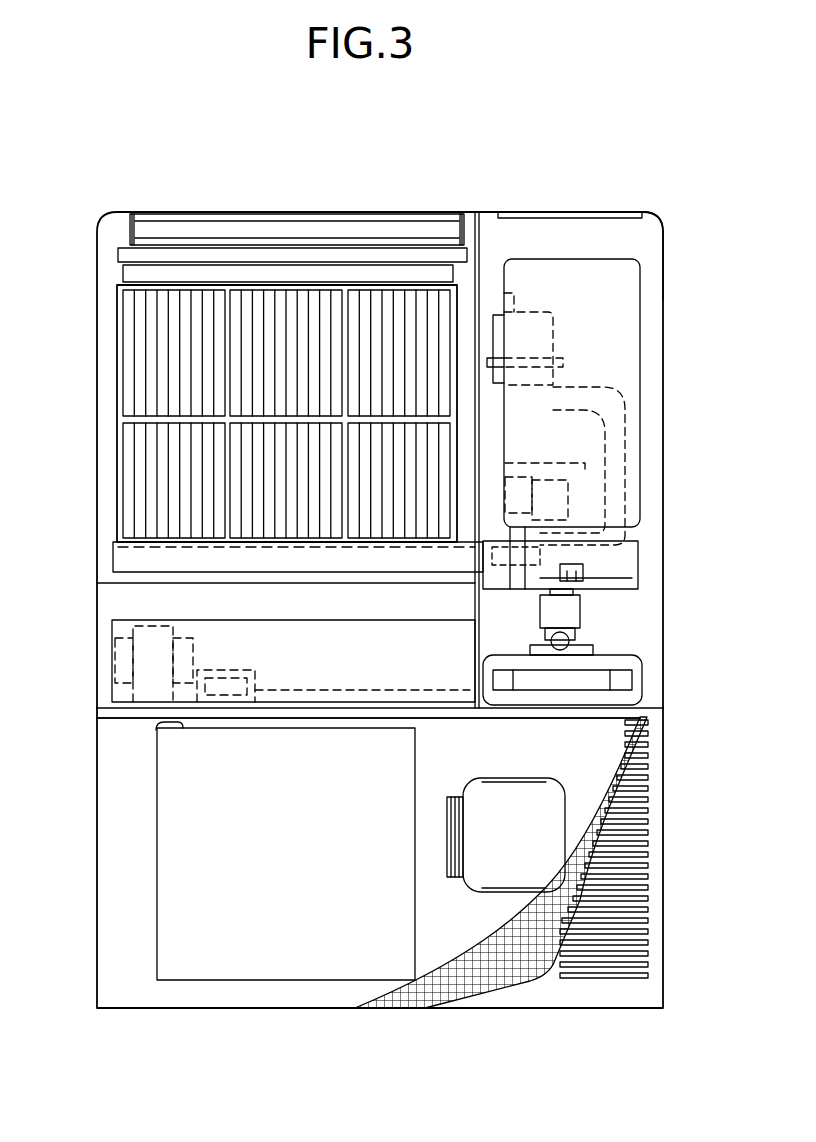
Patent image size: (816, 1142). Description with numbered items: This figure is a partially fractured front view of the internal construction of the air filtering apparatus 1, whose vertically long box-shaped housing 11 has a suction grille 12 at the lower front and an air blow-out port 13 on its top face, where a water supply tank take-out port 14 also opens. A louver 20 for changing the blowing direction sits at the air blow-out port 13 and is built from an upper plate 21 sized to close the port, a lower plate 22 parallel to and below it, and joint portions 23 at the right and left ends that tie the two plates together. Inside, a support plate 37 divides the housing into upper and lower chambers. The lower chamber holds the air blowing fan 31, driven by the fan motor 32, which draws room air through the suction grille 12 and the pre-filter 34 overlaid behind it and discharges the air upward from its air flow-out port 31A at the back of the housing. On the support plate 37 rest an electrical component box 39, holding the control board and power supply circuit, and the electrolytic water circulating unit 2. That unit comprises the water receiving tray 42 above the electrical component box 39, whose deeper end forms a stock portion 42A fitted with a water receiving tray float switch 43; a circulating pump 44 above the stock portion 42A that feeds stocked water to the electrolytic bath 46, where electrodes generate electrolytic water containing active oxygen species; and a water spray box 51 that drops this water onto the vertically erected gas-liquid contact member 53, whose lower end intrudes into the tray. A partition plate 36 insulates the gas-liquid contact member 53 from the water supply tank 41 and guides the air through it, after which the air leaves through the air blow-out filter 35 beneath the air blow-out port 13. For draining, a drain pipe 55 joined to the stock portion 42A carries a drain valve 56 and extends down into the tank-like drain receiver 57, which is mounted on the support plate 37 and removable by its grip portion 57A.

The air filtering apparatus 1 is at (664, 121).
The electrolytic water circulating unit 2 is at (619, 427).
The housing 11 is at (668, 219).
The suction grille 12 is at (654, 855).
The air blow-out port 13 is at (370, 208).
The water supply tank take-out port 14 is at (633, 212).
The louver 20 is at (260, 363).
The upper plate 21 is at (195, 217).
The lower plate 22 is at (168, 242).
The joint portions 23 is at (142, 237).
The air blowing fan 31 is at (260, 962).
The air flow-out port 31A is at (158, 725).
The fan motor 32 is at (483, 868).
The pre-filter 34 is at (503, 983).
The air blow-out filter 35 is at (118, 255).
The partition plate 36 is at (488, 264).
The support plate 37 is at (130, 713).
The electrical component box 39 is at (133, 620).
The water supply tank 41 is at (641, 285).
The water receiving tray 42 is at (630, 553).
The stock portion 42A is at (632, 578).
The water receiving tray float switch 43 is at (617, 562).
The circulating pump 44 is at (593, 543).
The electrolytic bath 46 is at (540, 345).
The water spray box 51 is at (122, 275).
The gas-liquid contact member 53 is at (118, 345).
The drain pipe 55 is at (580, 593).
The drain valve 56 is at (575, 620).
The drain receiver 57 is at (640, 672).
The grip portion 57A is at (600, 683).